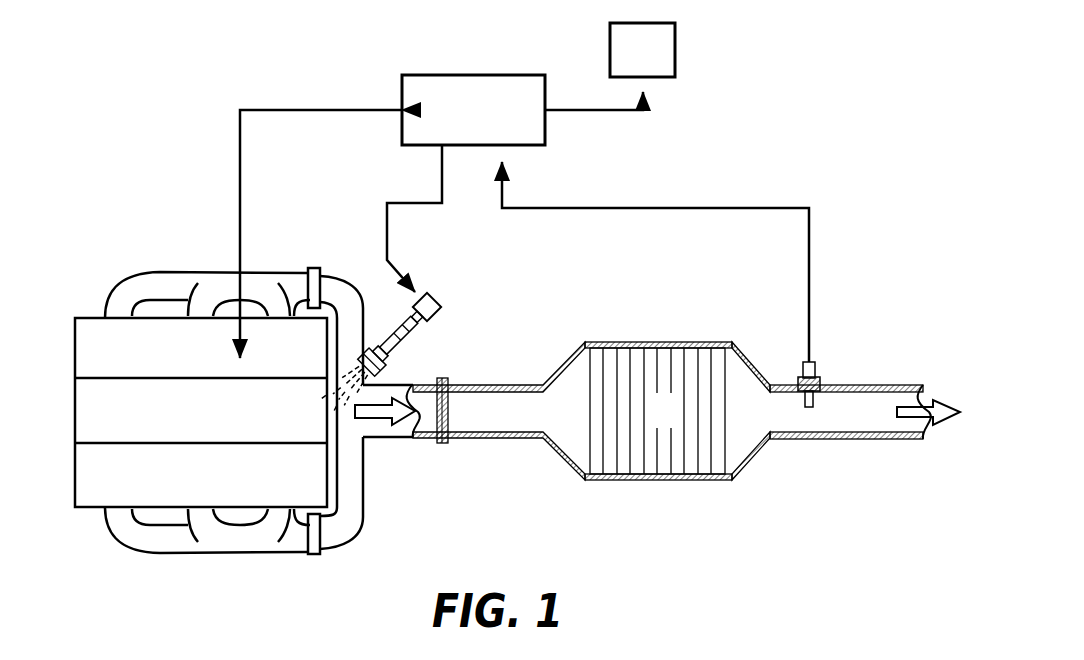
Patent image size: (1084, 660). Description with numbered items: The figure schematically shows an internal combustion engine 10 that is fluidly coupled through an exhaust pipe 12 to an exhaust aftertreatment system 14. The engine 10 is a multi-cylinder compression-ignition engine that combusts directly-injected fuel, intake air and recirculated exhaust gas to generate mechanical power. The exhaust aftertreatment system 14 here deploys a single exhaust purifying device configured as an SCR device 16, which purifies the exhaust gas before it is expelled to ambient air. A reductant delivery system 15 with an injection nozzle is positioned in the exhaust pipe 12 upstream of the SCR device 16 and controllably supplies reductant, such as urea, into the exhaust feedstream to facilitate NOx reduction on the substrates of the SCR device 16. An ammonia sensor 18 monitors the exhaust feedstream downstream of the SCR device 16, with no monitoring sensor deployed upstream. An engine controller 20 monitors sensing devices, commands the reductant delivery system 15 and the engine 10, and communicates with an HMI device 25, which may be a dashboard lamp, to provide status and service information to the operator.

The internal combustion engine 10 is at (219, 411).
The exhaust pipe 12 is at (502, 437).
The exhaust aftertreatment system 14 is at (692, 502).
The reductant delivery system 15 is at (475, 347).
The selective-catalyst reduction (SCR) device 16 is at (658, 343).
The ammonia sensor 18 is at (820, 382).
The engine controller 20 is at (524, 218).
The Human-Machine Interface (HMI) device 25 is at (610, 66).